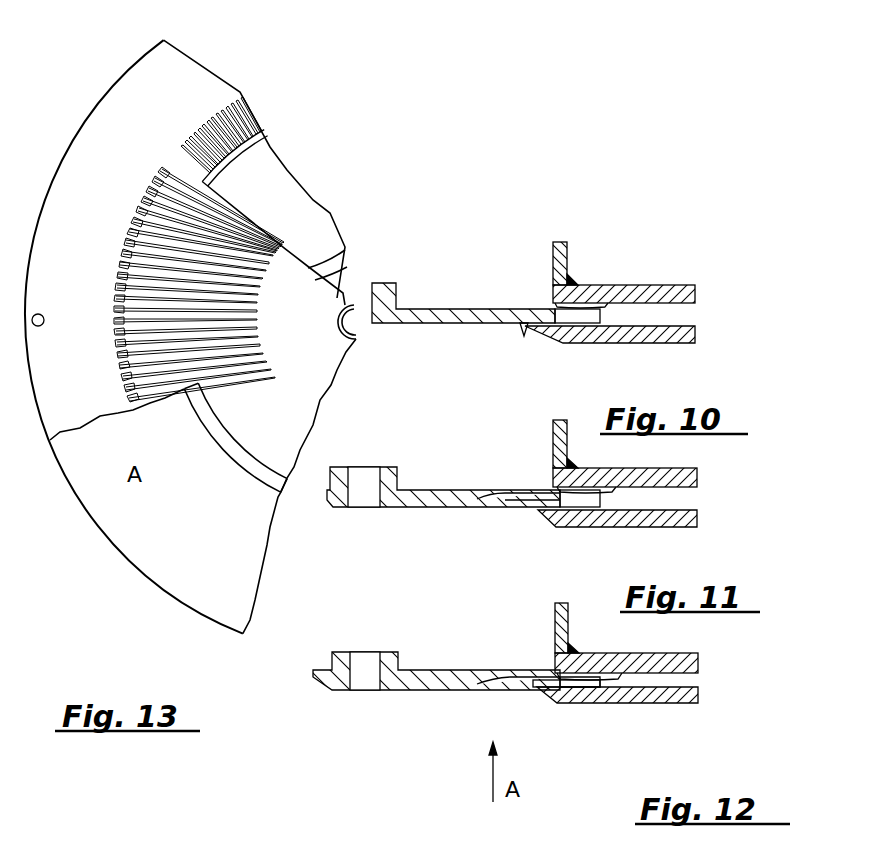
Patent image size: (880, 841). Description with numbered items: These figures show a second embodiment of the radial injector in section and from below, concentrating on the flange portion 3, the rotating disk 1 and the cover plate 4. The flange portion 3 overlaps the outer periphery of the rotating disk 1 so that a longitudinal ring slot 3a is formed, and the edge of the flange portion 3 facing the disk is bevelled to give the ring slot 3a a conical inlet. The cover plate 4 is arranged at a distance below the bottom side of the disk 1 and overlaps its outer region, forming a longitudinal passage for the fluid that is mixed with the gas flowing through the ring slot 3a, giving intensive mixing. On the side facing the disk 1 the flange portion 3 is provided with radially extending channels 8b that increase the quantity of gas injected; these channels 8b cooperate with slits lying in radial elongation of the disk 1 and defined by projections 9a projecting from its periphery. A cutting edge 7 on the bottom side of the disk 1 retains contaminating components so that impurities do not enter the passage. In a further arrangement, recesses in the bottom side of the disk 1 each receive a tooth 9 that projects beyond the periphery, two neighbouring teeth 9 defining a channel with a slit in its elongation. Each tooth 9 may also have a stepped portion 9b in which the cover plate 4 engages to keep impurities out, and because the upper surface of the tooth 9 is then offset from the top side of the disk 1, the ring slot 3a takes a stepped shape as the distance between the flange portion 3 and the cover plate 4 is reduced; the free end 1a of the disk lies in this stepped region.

In FIG. 13, the rotating disk 1 is at (338, 300).
In FIG. 10, the rotating disk 1 is at (440, 317).
In FIG. 11, the free end of contact tongue 1a is at (497, 495).
In FIG. 13, the flange portion 3 is at (207, 88).
In FIG. 10, the flange portion 3 is at (663, 292).
In FIG. 11, the flange portion 3 is at (620, 478).
In FIG. 12, the flange portion 3 is at (682, 662).
In FIG. 12, the ring slot 3a is at (557, 670).
In FIG. 13, the cover plate 4 is at (203, 590).
In FIG. 10, the cover plate 4 is at (673, 338).
In FIG. 11, the cover plate 4 is at (632, 519).
In FIG. 12, the cover plate 4 is at (677, 698).
In FIG. 10, the cutting edge 7 is at (523, 328).
In FIG. 10, the channels 8b is at (578, 301).
In FIG. 11, the tooth 9 is at (495, 504).
In FIG. 12, the tooth 9 is at (498, 686).
In FIG. 10, the projections 9a is at (578, 316).
In FIG. 12, the stepped portion 9b is at (537, 691).